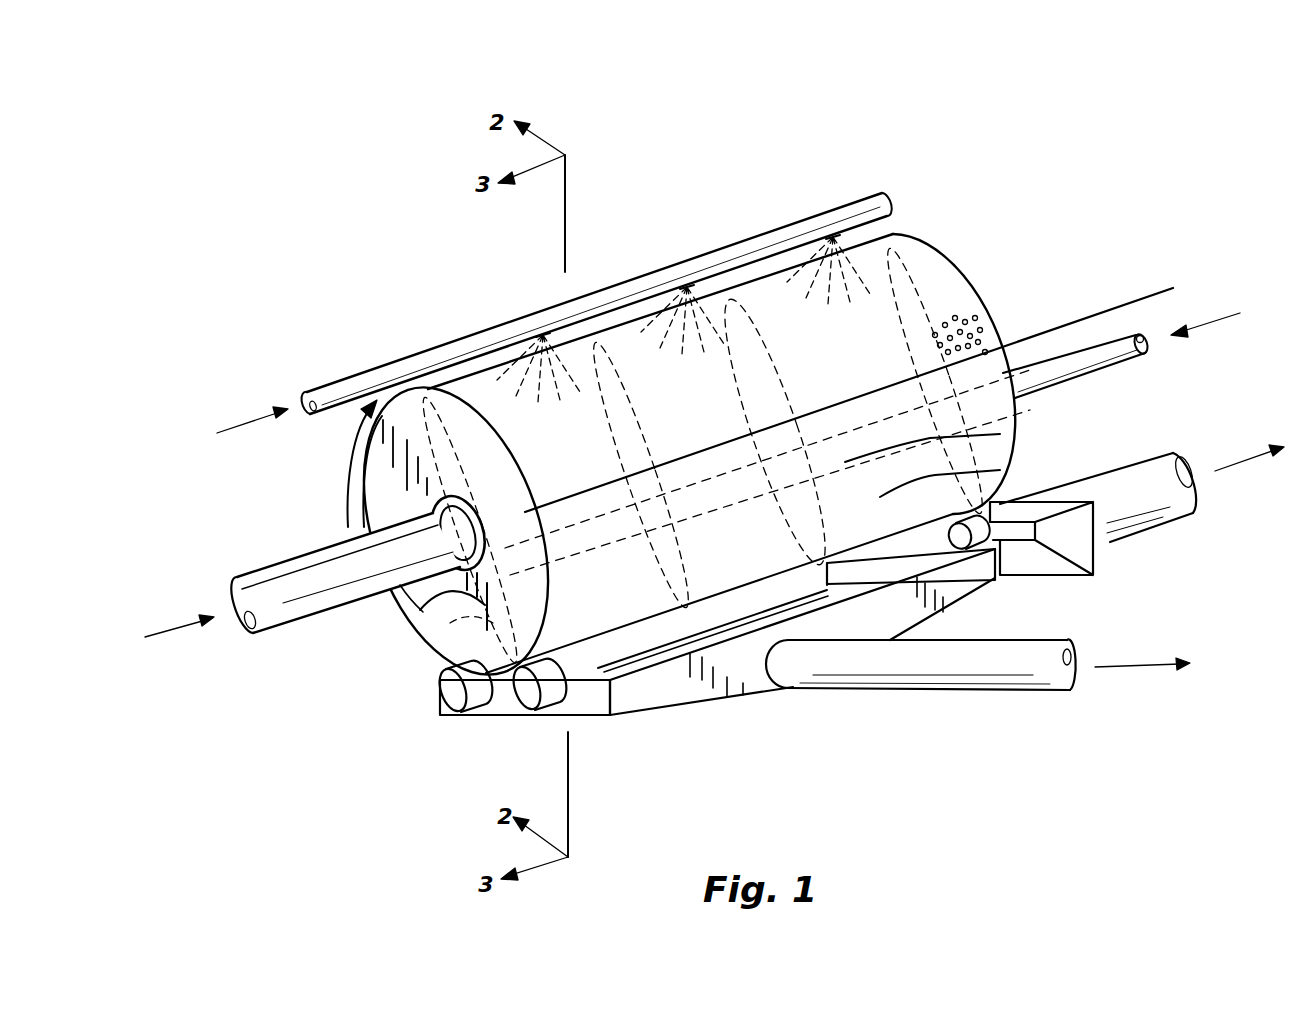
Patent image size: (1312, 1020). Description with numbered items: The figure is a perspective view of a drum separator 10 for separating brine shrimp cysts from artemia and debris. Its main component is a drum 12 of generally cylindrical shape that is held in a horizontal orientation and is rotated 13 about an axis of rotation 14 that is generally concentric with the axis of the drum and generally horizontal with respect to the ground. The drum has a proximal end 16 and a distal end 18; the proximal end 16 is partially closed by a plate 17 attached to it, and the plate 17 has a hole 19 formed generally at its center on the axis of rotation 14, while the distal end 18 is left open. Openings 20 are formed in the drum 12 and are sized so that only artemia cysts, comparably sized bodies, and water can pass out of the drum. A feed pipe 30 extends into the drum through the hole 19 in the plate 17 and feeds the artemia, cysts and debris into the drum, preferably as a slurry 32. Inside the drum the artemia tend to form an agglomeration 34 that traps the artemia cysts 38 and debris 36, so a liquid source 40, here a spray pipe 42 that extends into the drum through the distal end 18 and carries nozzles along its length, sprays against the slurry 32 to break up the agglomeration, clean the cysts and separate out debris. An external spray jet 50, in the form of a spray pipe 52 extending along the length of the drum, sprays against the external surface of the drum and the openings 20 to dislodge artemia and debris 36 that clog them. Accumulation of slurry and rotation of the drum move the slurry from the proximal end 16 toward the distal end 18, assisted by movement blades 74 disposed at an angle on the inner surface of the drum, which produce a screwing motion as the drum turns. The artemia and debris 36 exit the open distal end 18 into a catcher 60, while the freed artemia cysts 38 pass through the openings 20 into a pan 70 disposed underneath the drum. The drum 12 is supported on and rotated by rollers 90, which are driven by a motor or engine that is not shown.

The drum separator 10 is at (718, 116).
The drum 12 is at (913, 230).
The rotation 13 is at (343, 490).
The axis of rotation 14 is at (1120, 307).
The proximal end 16 is at (463, 377).
The plate 17 is at (403, 583).
The distal end 18 is at (957, 260).
The hole 19 is at (458, 573).
The openings 20 is at (983, 320).
The feed pipe 30 is at (260, 578).
The slurry 32 is at (483, 713).
The agglomeration 34 is at (597, 600).
The debris 36 is at (1000, 470).
The artemia cysts 38 is at (855, 600).
The liquid source 40 is at (1000, 434).
The spray pipe 42 is at (1110, 357).
The external spray jet 50 is at (727, 305).
The spray pipe 52 is at (780, 227).
The catcher 60 is at (1083, 555).
The pan 70 is at (673, 693).
The movement blades 74 is at (433, 600).
The rollers 90 is at (527, 700).